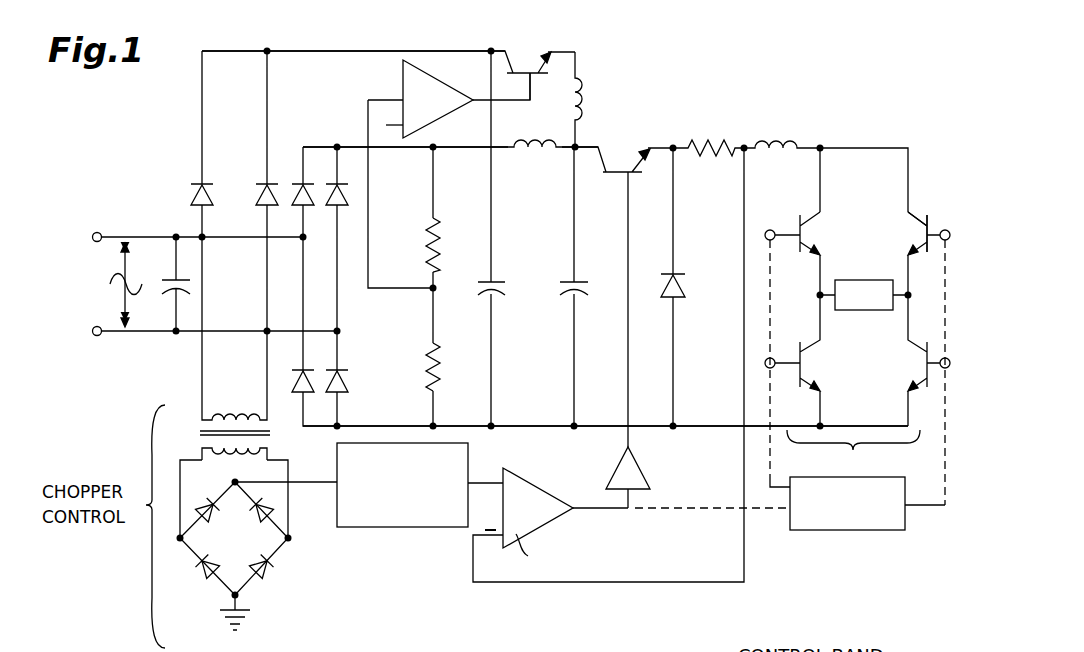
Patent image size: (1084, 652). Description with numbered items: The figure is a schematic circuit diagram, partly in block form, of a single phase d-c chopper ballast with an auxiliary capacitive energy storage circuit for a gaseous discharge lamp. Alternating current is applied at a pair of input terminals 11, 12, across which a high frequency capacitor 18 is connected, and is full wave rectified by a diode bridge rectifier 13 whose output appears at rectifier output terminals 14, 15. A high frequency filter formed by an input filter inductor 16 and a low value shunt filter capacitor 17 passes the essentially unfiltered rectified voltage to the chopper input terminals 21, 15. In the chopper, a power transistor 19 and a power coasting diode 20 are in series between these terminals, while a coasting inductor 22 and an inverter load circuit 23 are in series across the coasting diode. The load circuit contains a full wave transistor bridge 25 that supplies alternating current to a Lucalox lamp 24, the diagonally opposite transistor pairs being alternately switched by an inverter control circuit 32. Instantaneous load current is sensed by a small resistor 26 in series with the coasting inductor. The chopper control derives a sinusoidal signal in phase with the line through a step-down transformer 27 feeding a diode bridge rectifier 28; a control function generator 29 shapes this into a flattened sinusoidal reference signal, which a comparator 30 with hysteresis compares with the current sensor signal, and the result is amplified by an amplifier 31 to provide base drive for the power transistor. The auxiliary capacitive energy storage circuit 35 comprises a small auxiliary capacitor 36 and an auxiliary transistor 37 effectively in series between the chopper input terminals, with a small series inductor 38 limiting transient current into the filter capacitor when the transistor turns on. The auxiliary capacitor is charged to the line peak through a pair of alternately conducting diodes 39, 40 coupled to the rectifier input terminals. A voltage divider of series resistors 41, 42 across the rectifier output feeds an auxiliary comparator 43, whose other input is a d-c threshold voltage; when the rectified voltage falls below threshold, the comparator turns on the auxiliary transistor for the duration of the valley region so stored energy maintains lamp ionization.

The input terminal 11 is at (97, 232).
The input terminal 12 is at (97, 336).
The diode bridge rectifier 13 is at (333, 296).
The rectifier output terminal 14 is at (338, 145).
The chopper input terminal 15 is at (412, 425).
The input filter inductor 16 is at (546, 155).
The shunt filter capacitor 17 is at (570, 281).
The high frequency capacitor 18 is at (176, 278).
The power transistor 19 is at (620, 175).
The power coasting diode 20 is at (682, 297).
The chopper input terminal 21 is at (590, 147).
The coasting inductor 22 is at (768, 140).
The inverter load circuit 23 is at (873, 188).
The Lucalox lamp 24 is at (878, 280).
The full wave transistor bridge 25 is at (910, 206).
The resistor 26 is at (715, 146).
The step-down transformer 27 is at (270, 449).
The diode bridge rectifier 28 is at (231, 483).
The control function generator 29 is at (416, 526).
The comparator with hysteresis 30 is at (522, 478).
The amplifier 31 is at (642, 458).
The inverter control circuit 32 is at (808, 531).
The auxiliary capacitive energy storage circuit 35 is at (398, 42).
The auxiliary capacitor 36 is at (488, 283).
The auxiliary transistor 37 is at (520, 70).
The series inductor 38 is at (582, 96).
The diode 39 is at (194, 187).
The diode 40 is at (262, 190).
The series resistor 41 is at (428, 222).
The series resistor 42 is at (437, 383).
The auxiliary comparator 43 is at (403, 88).